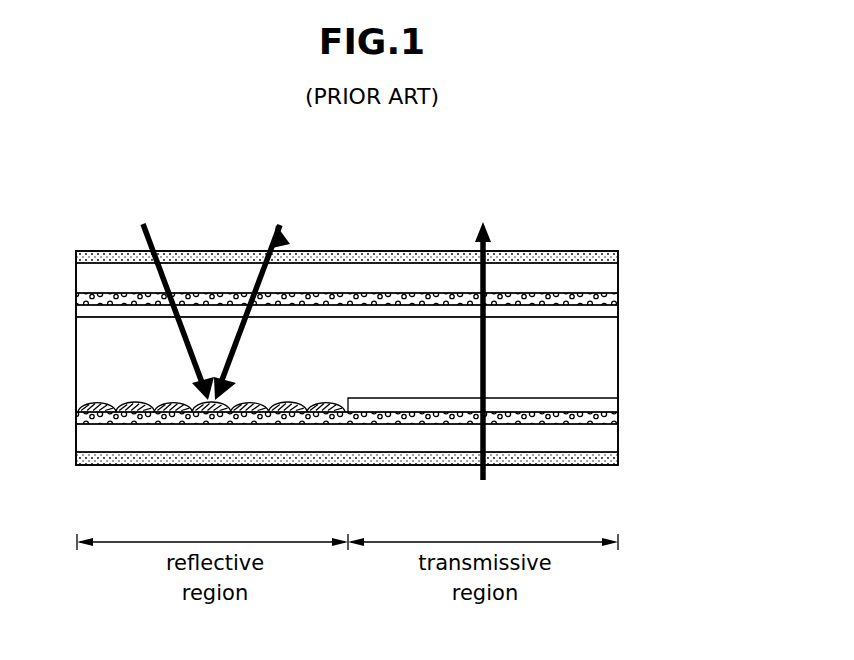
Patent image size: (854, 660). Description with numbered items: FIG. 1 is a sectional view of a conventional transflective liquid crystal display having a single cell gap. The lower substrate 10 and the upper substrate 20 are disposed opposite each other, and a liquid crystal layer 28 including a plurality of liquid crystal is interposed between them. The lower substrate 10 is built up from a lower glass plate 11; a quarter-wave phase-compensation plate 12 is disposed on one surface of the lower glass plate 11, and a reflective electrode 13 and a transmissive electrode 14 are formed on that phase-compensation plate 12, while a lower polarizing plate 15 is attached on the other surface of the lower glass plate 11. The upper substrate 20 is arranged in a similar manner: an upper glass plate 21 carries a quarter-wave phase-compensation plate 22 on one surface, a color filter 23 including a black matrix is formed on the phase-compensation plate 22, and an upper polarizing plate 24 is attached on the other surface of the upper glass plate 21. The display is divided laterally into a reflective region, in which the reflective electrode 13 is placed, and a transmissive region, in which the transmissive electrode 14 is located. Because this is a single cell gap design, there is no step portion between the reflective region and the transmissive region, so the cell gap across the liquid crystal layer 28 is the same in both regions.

The lower substrate 10 is at (412, 445).
The lower glass plate 11 is at (608, 440).
The λ/4 phase-compensation plate 12 is at (608, 416).
The reflective electrode 13 is at (318, 413).
The transmissive electrode 14 is at (606, 405).
The lower polarizing plate 15 is at (386, 463).
The upper substrate 20 is at (412, 292).
The upper glass plate 21 is at (608, 280).
The λ/4 phase-compensation plate 22 is at (612, 300).
The color filter 23 is at (386, 322).
The upper polarizing plate 24 is at (606, 257).
The liquid crystal layer 28 is at (608, 360).